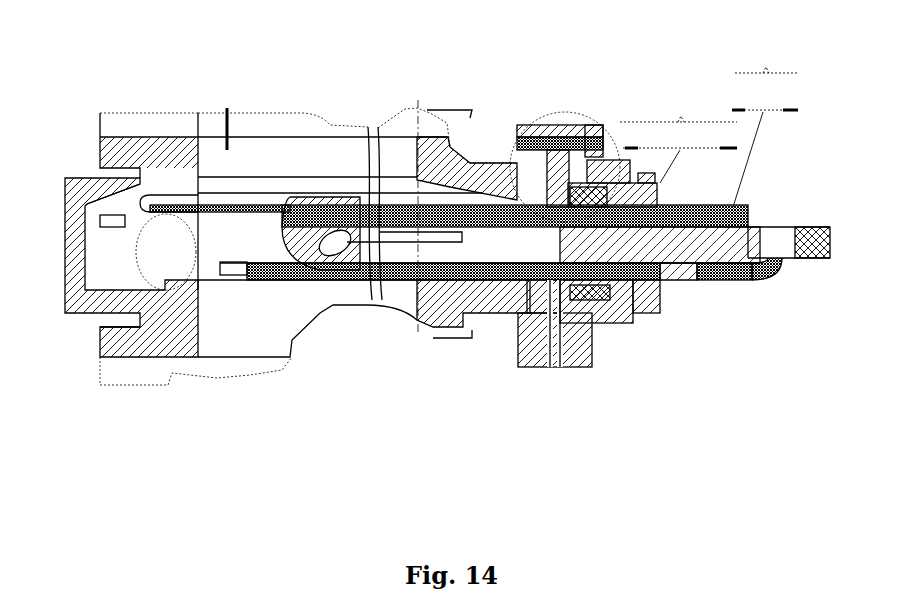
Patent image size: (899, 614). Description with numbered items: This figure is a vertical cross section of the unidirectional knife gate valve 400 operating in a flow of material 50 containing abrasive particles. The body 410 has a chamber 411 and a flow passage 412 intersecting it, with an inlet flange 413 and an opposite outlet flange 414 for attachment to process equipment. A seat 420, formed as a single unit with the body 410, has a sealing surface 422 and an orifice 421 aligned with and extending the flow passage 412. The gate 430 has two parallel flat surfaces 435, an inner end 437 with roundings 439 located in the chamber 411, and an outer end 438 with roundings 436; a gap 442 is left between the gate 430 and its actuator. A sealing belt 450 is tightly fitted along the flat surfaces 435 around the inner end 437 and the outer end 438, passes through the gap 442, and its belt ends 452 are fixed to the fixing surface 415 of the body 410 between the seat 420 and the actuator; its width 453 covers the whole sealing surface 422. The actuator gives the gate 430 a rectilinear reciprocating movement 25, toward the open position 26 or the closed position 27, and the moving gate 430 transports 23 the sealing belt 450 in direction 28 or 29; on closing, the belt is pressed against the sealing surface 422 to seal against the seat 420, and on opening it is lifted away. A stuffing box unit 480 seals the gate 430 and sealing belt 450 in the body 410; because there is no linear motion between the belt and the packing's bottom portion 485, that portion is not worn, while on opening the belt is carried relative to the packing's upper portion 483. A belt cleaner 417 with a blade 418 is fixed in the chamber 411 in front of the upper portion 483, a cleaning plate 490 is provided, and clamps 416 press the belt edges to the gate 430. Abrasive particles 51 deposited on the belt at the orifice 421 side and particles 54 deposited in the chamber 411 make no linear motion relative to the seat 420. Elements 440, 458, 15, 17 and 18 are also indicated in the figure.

The knife gate valve 400 is at (410, 40).
The body 410 is at (73, 317).
The chamber 411 is at (127, 270).
The flow passage 412 is at (337, 168).
The inlet flange 413 is at (120, 117).
The outlet flange 414 is at (140, 387).
The fixing surface 415 is at (547, 365).
The clamps 416 is at (160, 190).
The belt cleaner 417 is at (505, 150).
The blade 418 is at (578, 127).
The seat 420 is at (195, 357).
The orifice 421 is at (242, 346).
The sealing surface 422 is at (173, 205).
The gate 430 is at (700, 280).
The flat surfaces 435 is at (680, 262).
The roundings 436 is at (763, 220).
The inner end 437 is at (288, 200).
The outer end 438 is at (780, 218).
The roundings 439 is at (282, 225).
The tube end 440 is at (803, 226).
The gap 442 is at (787, 267).
The sealing belt 450 is at (720, 267).
The belt ends 452 is at (612, 323).
The width 453 is at (467, 327).
The seam 458 is at (378, 300).
The stuffing box unit 480 is at (593, 342).
The packing's upper portion 483 is at (693, 207).
The packing's bottom portion 485 is at (670, 265).
The cleaning plate 490 is at (267, 280).
The seal 15 is at (253, 205).
The detail circle 17 is at (540, 112).
The section line 18 is at (445, 221).
The transport 23 is at (678, 109).
The rectilinear reciprocating moving 25 is at (766, 59).
The movement to the open position 26 is at (793, 96).
The movement to the closed position 27 is at (764, 146).
The direction of transport 28 is at (728, 136).
The direction of transport 29 is at (680, 154).
The material 50 is at (226, 110).
The abrasive particles 51 is at (410, 320).
The abrasive particles 54 is at (367, 145).